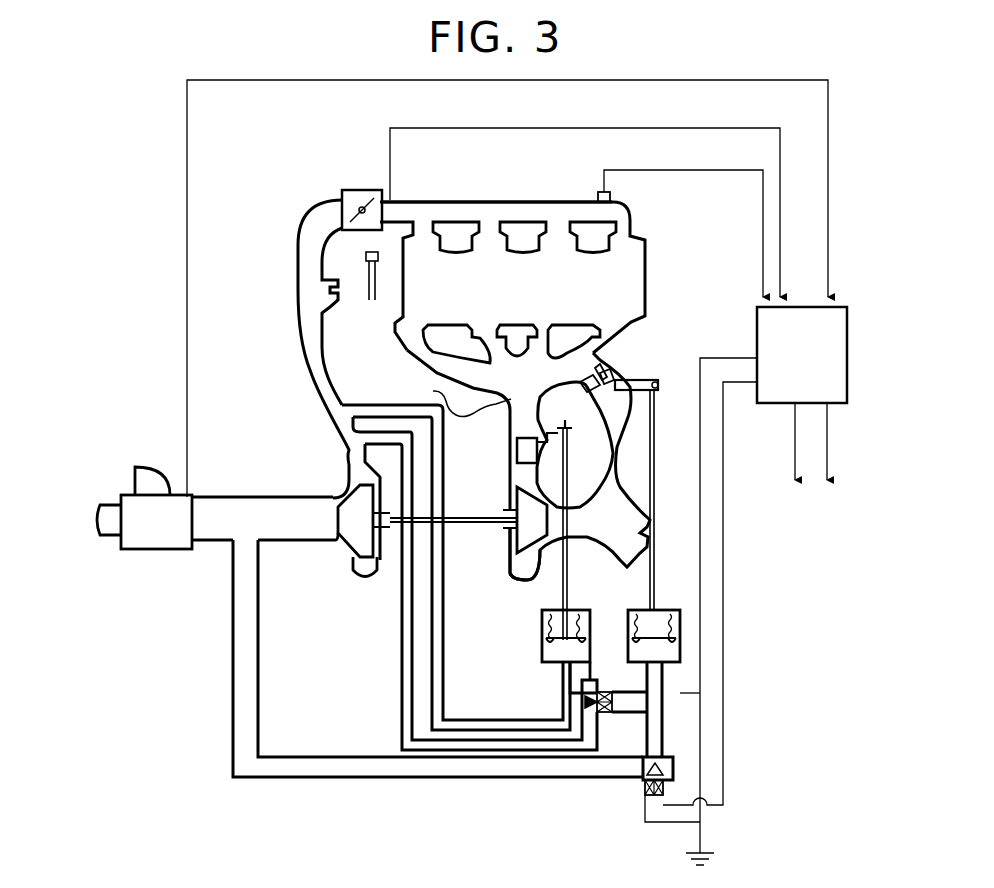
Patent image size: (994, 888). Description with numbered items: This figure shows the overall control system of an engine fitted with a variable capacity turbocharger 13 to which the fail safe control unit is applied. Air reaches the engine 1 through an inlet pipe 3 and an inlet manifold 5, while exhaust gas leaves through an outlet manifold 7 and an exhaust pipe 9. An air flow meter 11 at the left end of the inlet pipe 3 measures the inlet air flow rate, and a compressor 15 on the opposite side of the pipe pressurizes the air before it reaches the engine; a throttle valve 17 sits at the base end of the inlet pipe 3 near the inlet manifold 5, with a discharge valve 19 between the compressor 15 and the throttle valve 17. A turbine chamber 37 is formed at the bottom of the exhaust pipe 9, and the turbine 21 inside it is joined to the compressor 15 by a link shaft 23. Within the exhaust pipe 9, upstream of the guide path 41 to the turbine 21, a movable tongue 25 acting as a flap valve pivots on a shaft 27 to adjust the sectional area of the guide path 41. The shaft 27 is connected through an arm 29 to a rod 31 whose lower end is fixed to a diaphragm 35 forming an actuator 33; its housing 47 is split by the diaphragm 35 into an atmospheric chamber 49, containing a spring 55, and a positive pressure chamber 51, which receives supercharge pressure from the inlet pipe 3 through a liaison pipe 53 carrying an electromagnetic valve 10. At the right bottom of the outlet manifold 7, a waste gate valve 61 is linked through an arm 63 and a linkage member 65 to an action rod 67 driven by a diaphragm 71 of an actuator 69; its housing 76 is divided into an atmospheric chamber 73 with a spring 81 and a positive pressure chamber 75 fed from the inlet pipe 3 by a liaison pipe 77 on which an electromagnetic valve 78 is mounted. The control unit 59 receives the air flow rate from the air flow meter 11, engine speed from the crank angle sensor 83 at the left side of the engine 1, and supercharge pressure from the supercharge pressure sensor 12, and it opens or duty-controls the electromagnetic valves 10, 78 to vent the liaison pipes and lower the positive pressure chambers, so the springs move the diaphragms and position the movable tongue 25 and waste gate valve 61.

The engine 1 is at (528, 260).
The inlet pipe 3 is at (303, 381).
The inlet manifold 5 is at (483, 196).
The outlet manifold 7 is at (482, 385).
The exhaust pipe 9 is at (511, 473).
The electromagnetic valve 10 is at (604, 712).
The air flow meter 11 is at (165, 550).
The supercharge pressure sensor 12 is at (610, 198).
The turbocharger 13 is at (462, 606).
The compressor 15 is at (345, 555).
The throttle valve 17 is at (345, 190).
The discharge valve 19 is at (340, 300).
The turbine 21 is at (518, 540).
The link shaft 23 is at (474, 512).
The movable tongue 25 is at (517, 448).
The shaft 27 is at (570, 456).
The arm 29 is at (562, 427).
The rod 31 is at (567, 452).
The actuator 33 is at (561, 636).
The diaphragm 35 is at (578, 642).
The turbine chamber 37 is at (513, 577).
The guide path 41 is at (433, 391).
The housing 47 is at (586, 634).
The atmospheric chamber 49 is at (542, 630).
The positive pressure chamber 51 is at (542, 660).
The liaison pipe 53 is at (480, 718).
The spring 55 is at (580, 609).
The control unit 59 is at (757, 333).
The waste gate valve 61 is at (604, 366).
The arm 63 is at (632, 388).
The linkage member 65 is at (635, 380).
The action rod 67 is at (655, 442).
The actuator 69 is at (666, 560).
The diaphragm 71 is at (687, 634).
The atmospheric chamber 73 is at (636, 608).
The positive pressure chamber 75 is at (668, 662).
The housing 76 is at (680, 623).
The liaison pipe 77 is at (658, 740).
The electromagnetic valve 78 is at (640, 792).
The spring 81 is at (672, 608).
The crank angle sensor 83 is at (366, 258).